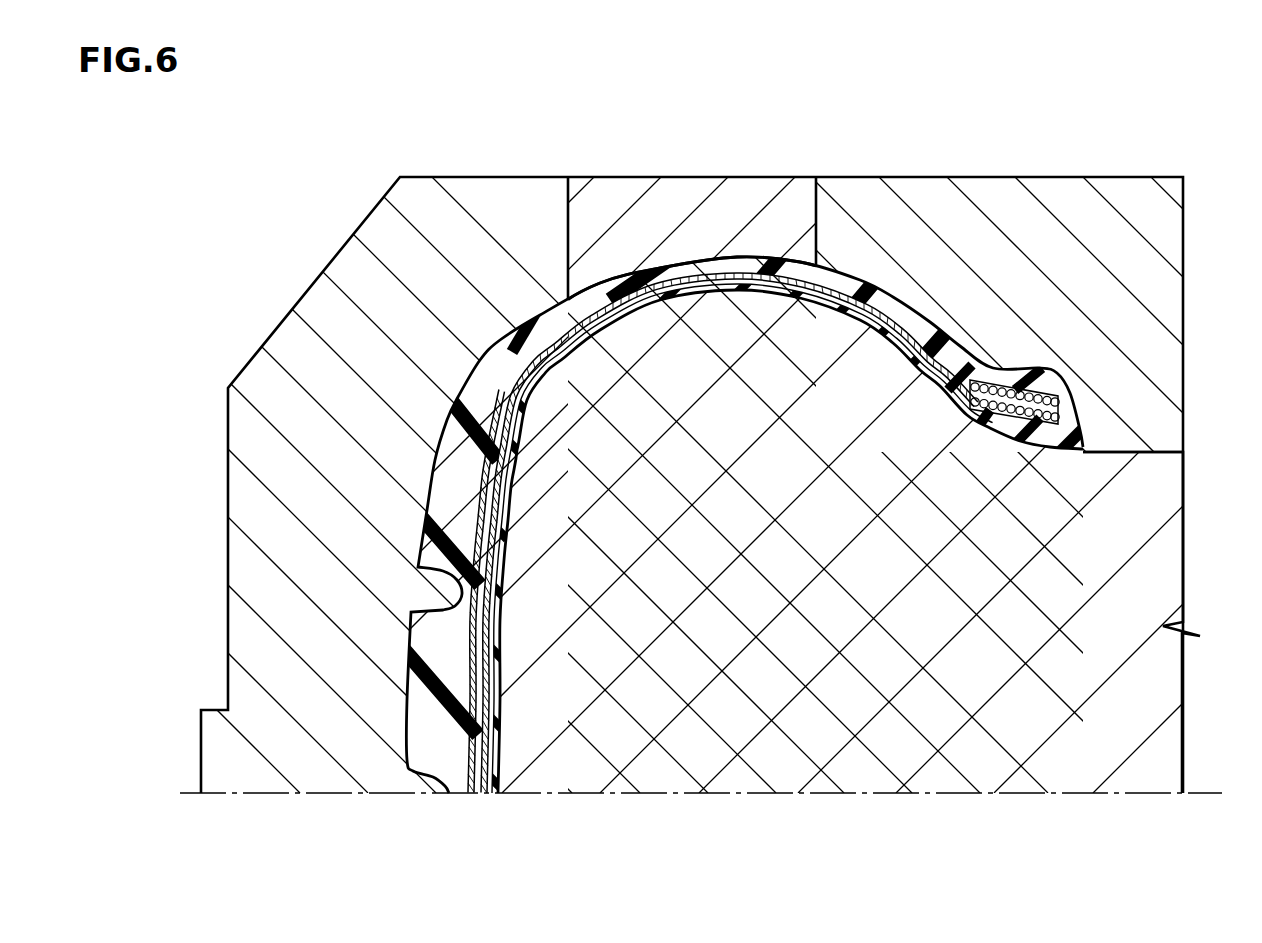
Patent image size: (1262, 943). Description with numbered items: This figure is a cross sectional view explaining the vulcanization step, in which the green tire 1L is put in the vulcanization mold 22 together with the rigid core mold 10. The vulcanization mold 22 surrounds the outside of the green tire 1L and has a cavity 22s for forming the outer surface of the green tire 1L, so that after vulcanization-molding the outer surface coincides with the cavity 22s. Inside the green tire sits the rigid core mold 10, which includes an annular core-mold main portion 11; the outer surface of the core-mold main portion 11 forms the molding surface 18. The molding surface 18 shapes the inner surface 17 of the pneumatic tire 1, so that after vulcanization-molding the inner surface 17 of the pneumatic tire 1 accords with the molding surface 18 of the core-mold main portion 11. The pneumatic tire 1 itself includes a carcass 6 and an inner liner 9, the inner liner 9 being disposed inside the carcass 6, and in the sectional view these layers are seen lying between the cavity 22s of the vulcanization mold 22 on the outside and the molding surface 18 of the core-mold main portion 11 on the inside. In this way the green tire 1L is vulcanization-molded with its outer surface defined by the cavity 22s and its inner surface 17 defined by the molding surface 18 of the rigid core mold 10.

The vulcanization mold 22 is at (329, 318).
The cavity 22s is at (742, 259).
The pneumatic tire 1 is at (826, 500).
The green tire 1L is at (826, 500).
The carcass 6 is at (673, 277).
The inner liner 9 is at (992, 428).
The molding surface 18 is at (480, 750).
The inner surface 17 is at (497, 692).
The rigid core mold 10 is at (685, 529).
The core-mold main portion 11 is at (812, 746).